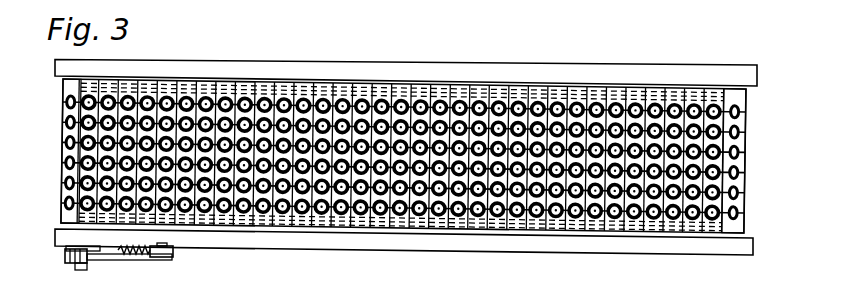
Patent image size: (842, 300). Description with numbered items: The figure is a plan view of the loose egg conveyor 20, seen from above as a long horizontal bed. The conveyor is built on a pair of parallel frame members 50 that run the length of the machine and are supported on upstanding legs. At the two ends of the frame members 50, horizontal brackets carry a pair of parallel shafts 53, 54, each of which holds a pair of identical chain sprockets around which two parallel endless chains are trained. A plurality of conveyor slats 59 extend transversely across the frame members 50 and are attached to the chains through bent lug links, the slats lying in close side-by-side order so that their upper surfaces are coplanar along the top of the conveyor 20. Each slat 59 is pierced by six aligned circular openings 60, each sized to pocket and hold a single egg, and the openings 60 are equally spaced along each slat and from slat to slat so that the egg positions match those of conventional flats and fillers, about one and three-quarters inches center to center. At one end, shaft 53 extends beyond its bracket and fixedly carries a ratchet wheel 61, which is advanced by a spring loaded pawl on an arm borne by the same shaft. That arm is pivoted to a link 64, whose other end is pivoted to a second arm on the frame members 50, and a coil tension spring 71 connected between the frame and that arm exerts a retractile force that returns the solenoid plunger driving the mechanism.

The loose egg conveyor 20 is at (556, 254).
The frame members 50 is at (430, 62).
The shaft 53 is at (62, 219).
The shaft 54 is at (745, 231).
The conveyor slats 59 is at (80, 140).
The circular openings 60 is at (64, 199).
The ratchet wheel 61 is at (65, 262).
The link 64 is at (133, 256).
The coil tension spring 71 is at (147, 252).